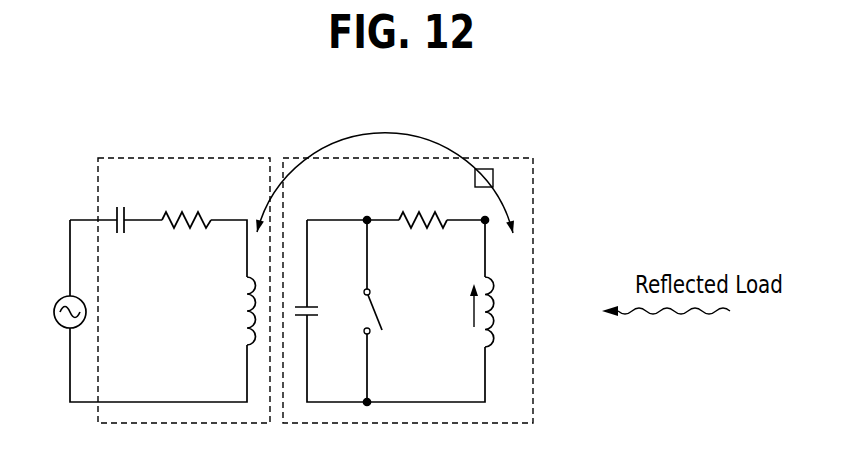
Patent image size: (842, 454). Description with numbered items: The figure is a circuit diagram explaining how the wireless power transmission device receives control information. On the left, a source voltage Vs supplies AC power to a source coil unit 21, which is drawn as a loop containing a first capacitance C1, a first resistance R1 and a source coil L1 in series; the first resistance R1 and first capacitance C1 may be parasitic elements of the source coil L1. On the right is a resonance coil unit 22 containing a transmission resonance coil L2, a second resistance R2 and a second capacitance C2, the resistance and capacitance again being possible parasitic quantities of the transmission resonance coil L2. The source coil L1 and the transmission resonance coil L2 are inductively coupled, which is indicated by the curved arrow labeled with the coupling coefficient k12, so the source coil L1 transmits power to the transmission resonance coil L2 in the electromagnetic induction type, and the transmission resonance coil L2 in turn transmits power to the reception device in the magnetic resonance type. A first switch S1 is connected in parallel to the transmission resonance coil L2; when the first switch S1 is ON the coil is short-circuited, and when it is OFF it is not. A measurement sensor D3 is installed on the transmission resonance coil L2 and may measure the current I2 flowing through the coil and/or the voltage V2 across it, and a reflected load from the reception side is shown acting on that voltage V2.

The source coil unit 21 is at (146, 262).
The resonance coil unit 22 is at (417, 262).
The measurement sensor D3 is at (487, 168).
The coupling coefficient k12 is at (385, 168).
The source voltage Vs is at (54, 312).
The first capacitance C1 is at (118, 205).
The first resistance R1 is at (186, 203).
The source coil L1 is at (236, 311).
The second resistance R2 is at (423, 203).
The second capacitance C2 is at (323, 313).
The first switch S1 is at (385, 311).
The transmission resonance coil L2 is at (504, 312).
The current I2 is at (464, 306).
The voltage V2 is at (555, 263).